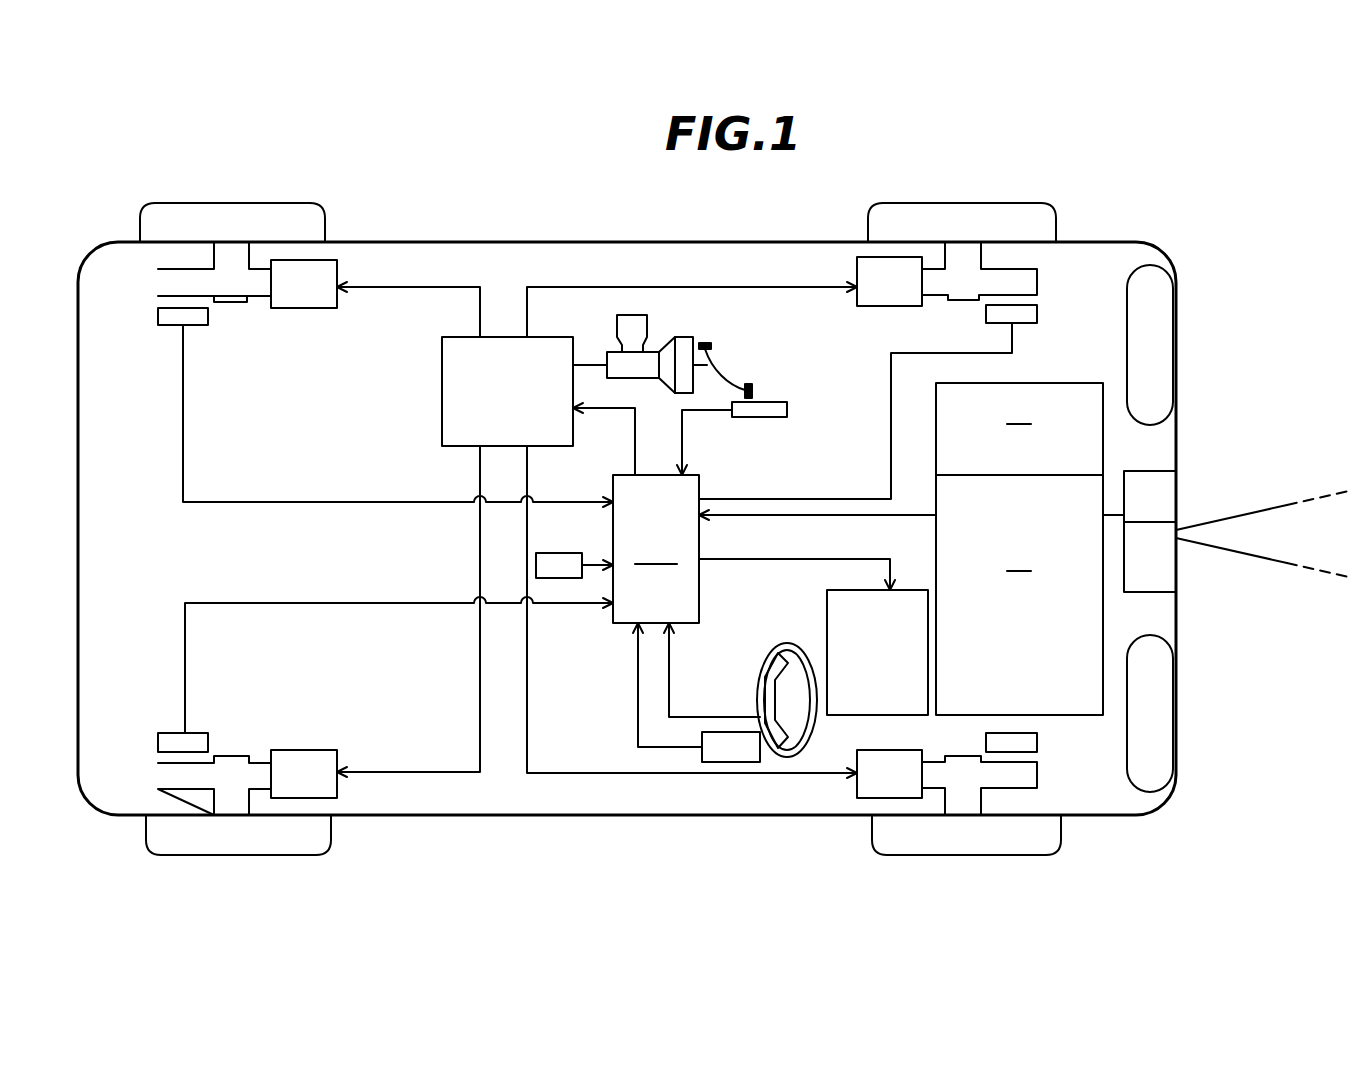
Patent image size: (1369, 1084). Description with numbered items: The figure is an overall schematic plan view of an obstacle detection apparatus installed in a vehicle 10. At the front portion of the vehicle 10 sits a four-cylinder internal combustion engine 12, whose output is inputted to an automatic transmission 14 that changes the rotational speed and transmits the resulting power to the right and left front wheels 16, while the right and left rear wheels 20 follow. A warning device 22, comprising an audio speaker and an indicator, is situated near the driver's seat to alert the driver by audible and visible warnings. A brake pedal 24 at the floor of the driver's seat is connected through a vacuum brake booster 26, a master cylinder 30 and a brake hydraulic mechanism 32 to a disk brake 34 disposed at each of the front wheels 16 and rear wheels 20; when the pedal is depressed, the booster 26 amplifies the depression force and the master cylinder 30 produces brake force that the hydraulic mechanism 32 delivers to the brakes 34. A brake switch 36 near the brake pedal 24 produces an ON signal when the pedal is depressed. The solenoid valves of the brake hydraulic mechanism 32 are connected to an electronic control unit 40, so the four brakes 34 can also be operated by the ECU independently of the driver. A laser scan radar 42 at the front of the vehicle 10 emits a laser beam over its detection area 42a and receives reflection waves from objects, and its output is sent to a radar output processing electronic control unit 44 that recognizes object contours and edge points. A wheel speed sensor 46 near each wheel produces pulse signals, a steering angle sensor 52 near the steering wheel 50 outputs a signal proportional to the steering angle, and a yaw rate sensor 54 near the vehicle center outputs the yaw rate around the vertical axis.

The vehicle 10 is at (1190, 424).
The internal combustion engine 12 is at (1019, 595).
The automatic transmission 14 is at (1019, 429).
The front wheels 16 is at (1057, 220).
The rear wheels 20 is at (323, 214).
The warning device 22 is at (828, 612).
The brake pedal 24 is at (730, 378).
The vacuum brake booster 26 is at (693, 344).
The master cylinder 30 is at (648, 326).
The brake hydraulic mechanism 32 is at (442, 422).
The brake 34 is at (318, 308).
The brake switch 36 is at (787, 410).
The electronic control unit 40 is at (613, 612).
The radar 42 is at (1165, 566).
The detection area 42a is at (1218, 512).
The radar output processing electronic control unit 44 is at (1143, 471).
The wheel speed sensor 46 is at (208, 313).
The steering wheel 50 is at (765, 672).
The steering angle sensor 52 is at (702, 738).
The yaw rate sensor 54 is at (558, 553).